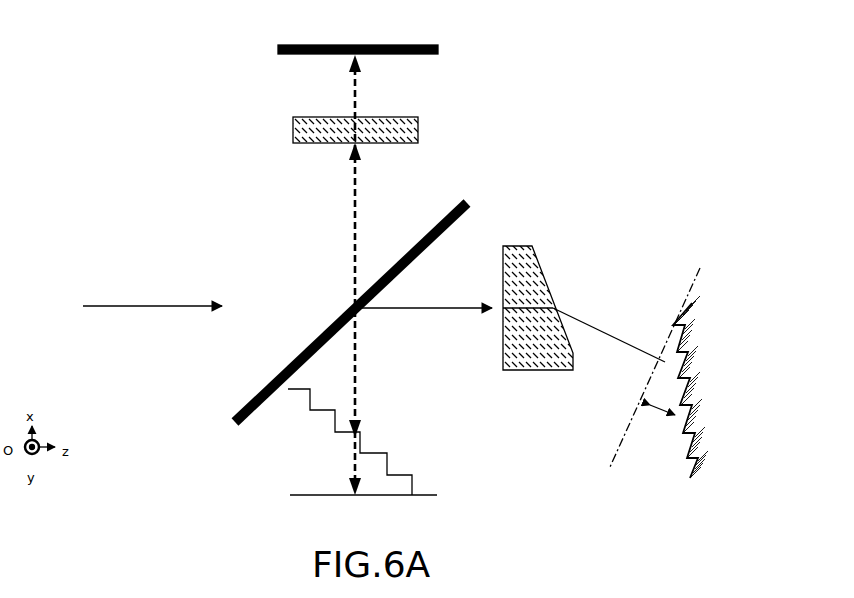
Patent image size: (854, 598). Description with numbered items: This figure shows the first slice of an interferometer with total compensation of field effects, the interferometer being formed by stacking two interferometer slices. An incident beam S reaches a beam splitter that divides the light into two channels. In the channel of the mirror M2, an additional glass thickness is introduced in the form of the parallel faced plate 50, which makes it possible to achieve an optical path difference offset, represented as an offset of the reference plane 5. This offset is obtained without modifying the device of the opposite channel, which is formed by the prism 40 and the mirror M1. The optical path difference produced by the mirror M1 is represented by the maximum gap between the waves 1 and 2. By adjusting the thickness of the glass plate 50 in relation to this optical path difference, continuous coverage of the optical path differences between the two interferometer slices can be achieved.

The incident light beam S is at (140, 301).
The mirror M2 is at (438, 52).
The parallel faced plate 50 is at (292, 127).
The prism 40 is at (535, 253).
The reference plane 5 is at (710, 249).
The mirror M1 is at (698, 387).
The wave 1 is at (444, 486).
The wave 2 is at (444, 497).